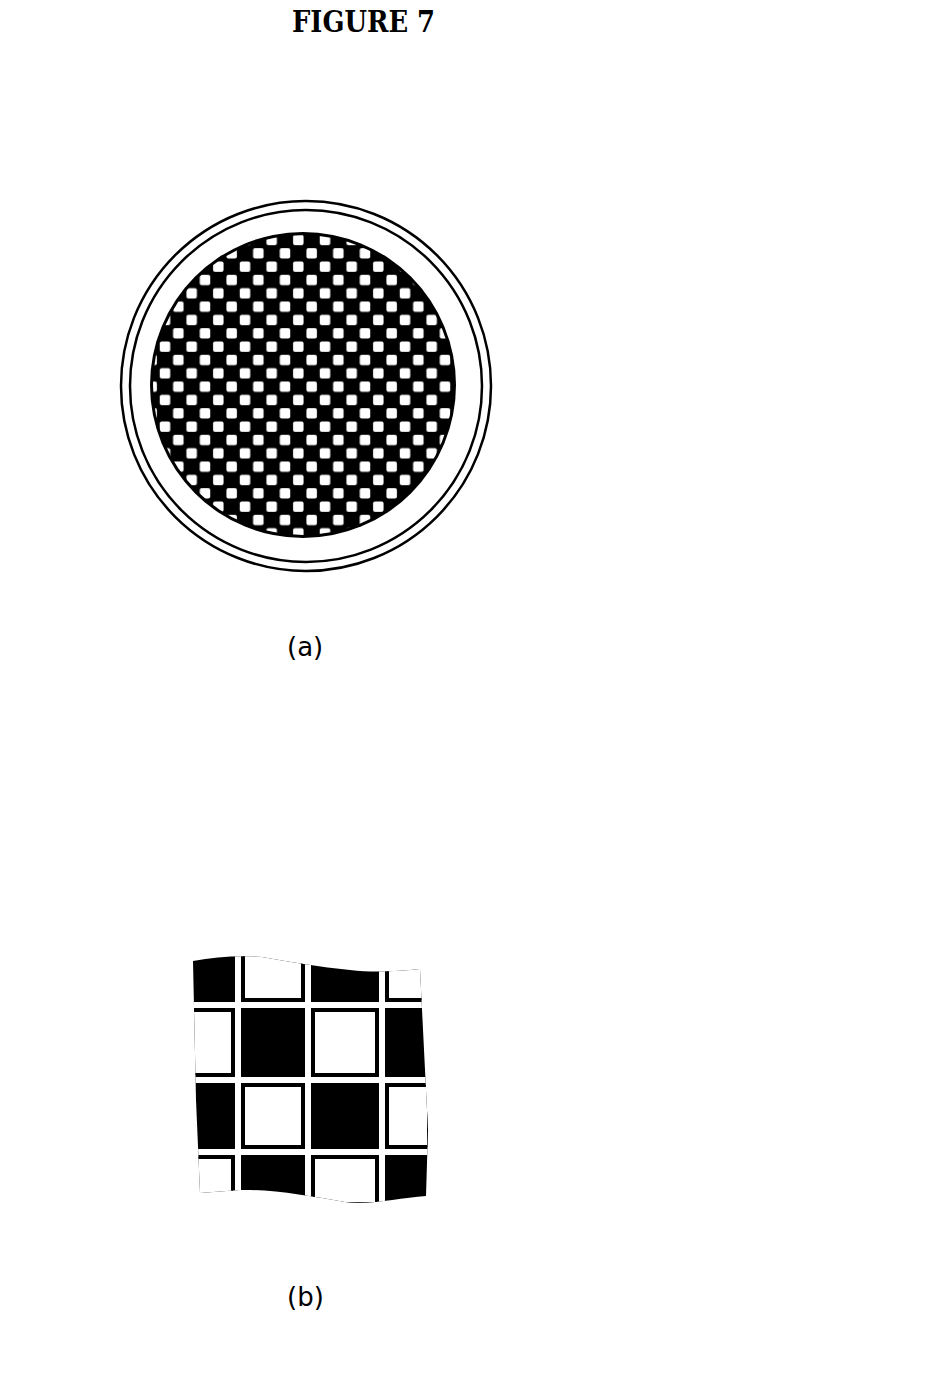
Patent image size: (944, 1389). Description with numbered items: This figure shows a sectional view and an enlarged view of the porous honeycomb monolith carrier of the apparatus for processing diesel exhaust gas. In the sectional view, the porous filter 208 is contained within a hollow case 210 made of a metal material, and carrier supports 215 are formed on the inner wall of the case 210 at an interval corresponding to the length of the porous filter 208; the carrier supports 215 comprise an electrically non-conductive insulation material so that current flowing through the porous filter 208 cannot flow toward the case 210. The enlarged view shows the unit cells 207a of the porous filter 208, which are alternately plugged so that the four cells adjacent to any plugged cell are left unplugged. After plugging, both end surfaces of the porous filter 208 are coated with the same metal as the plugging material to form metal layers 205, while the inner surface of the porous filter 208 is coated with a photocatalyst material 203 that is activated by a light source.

The photocatalyst material 203 is at (296, 970).
The metal layer 205 is at (345, 245).
The unit cell 207a is at (393, 258).
The porous filter 208 is at (204, 502).
The case 210 is at (480, 448).
The carrier support 215 is at (467, 401).